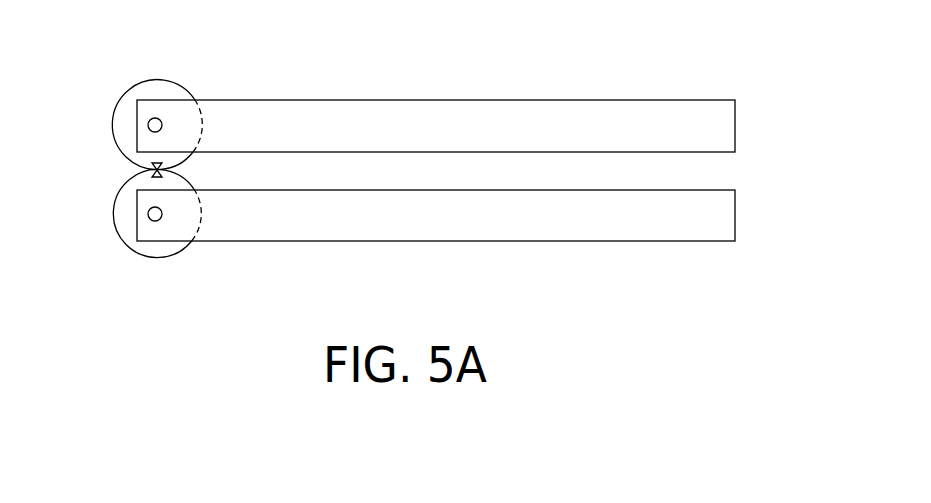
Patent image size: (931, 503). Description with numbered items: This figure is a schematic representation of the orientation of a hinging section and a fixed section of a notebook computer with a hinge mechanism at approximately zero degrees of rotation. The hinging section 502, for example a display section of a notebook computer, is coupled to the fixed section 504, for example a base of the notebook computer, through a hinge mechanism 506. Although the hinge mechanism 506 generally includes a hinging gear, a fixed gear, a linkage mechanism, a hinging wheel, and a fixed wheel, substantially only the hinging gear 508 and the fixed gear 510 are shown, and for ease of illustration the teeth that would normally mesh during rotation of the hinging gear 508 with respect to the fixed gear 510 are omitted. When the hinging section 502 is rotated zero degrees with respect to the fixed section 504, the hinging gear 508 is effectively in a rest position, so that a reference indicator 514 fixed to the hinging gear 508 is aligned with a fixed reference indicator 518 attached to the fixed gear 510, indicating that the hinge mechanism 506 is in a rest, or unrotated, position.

The hinging section 502 is at (735, 127).
The fixed section 504 is at (735, 216).
The hinge mechanism 506 is at (137, 277).
The hinging gear 508 is at (167, 78).
The fixed gear 510 is at (163, 258).
The reference indicator 514 is at (157, 169).
The fixed reference indicator 518 is at (157, 171).